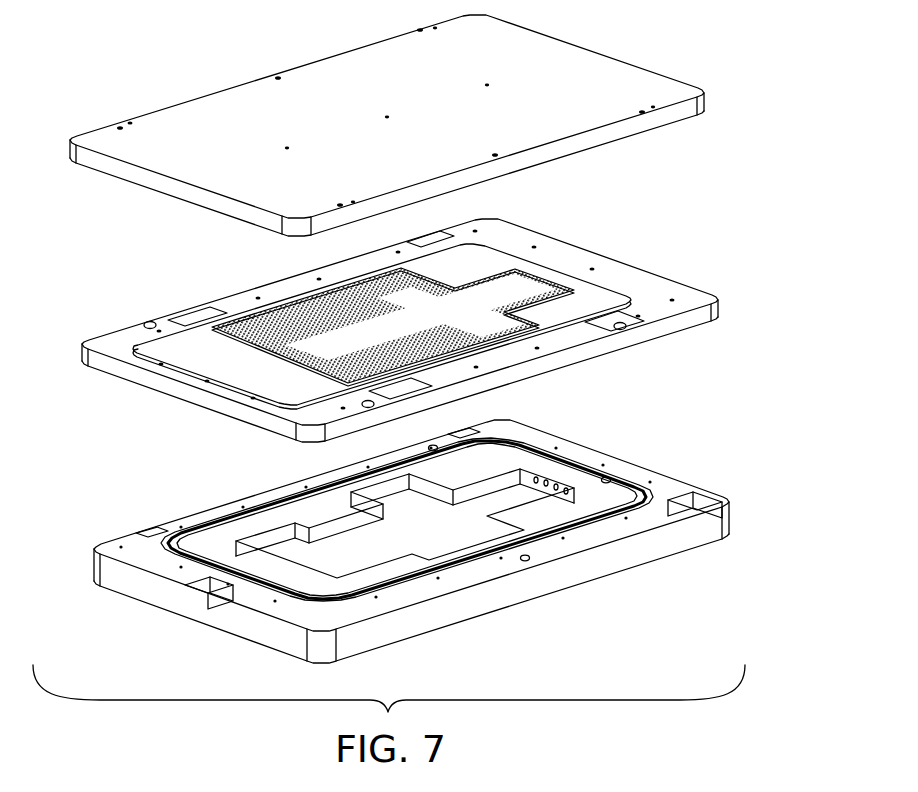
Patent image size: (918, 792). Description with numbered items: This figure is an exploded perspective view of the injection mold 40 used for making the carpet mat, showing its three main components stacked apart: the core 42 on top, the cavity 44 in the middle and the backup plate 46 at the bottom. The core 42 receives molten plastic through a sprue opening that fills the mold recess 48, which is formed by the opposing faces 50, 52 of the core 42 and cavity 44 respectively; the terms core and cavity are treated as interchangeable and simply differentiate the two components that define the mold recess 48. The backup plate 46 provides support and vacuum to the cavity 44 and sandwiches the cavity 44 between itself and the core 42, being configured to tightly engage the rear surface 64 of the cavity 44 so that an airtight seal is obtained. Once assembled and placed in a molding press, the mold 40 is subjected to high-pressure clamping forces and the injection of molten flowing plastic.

The injection mold 40 is at (153, 77).
The core 42 is at (705, 96).
The face of the core 50 is at (668, 125).
The cavity 44 is at (719, 307).
The rear surface of the cavity 64 is at (650, 341).
The mold recess 48 is at (540, 280).
The face of the cavity 52 is at (576, 284).
The backup plate 46 is at (729, 506).